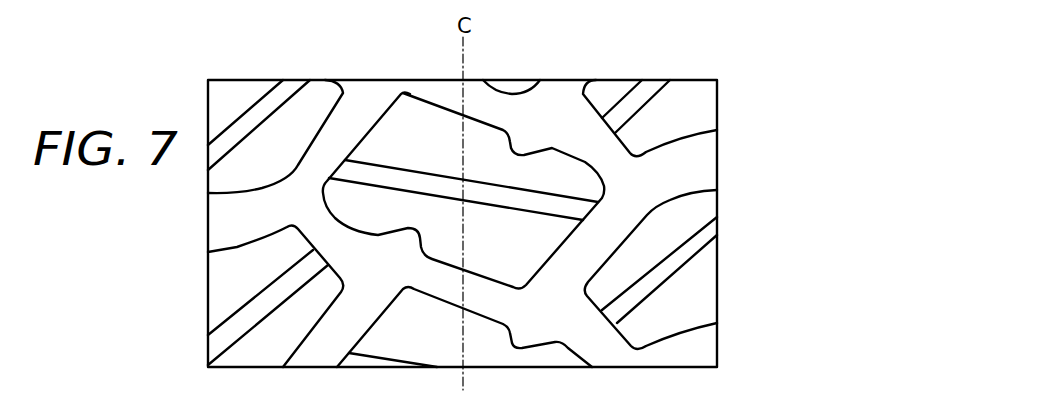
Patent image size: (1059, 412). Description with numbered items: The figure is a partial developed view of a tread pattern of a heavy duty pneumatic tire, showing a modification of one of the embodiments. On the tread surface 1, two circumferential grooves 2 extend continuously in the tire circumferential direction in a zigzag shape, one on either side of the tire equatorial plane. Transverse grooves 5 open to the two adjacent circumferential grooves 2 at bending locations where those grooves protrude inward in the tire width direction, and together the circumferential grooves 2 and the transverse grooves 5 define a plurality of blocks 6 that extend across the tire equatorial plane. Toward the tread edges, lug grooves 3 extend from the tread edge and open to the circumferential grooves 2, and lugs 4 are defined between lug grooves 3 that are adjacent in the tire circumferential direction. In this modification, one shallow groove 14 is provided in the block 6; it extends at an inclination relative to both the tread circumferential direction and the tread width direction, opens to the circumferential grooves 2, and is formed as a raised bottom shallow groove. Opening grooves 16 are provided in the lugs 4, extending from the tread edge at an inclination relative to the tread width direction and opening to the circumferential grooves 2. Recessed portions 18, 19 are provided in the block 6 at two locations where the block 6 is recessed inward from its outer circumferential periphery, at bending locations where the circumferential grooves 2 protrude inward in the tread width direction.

The tread surface 1 is at (615, 56).
The circumferential grooves 2 is at (323, 347).
The lug grooves 3 is at (220, 220).
The lugs 4 is at (273, 155).
The transverse grooves 5 is at (483, 104).
The block 6 is at (441, 143).
The shallow groove 14 is at (523, 203).
The opening grooves 16 is at (289, 90).
The recessed portion 18 is at (518, 150).
The recessed portion 19 is at (408, 237).